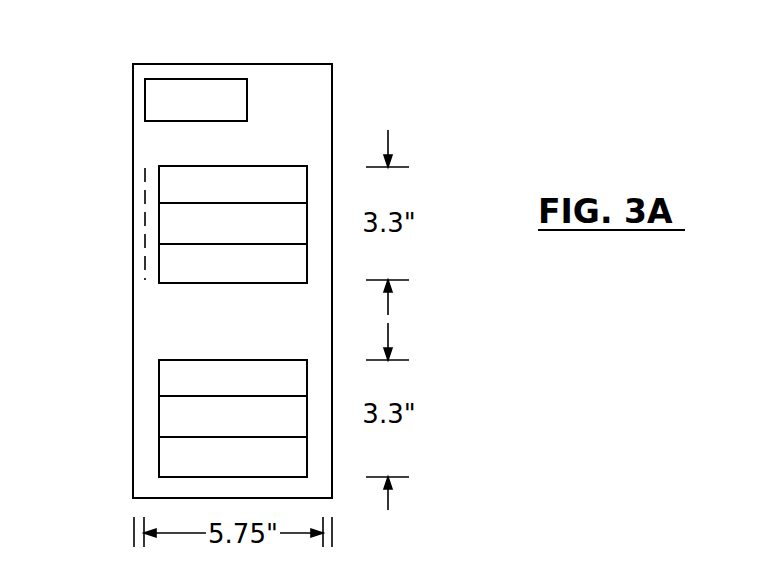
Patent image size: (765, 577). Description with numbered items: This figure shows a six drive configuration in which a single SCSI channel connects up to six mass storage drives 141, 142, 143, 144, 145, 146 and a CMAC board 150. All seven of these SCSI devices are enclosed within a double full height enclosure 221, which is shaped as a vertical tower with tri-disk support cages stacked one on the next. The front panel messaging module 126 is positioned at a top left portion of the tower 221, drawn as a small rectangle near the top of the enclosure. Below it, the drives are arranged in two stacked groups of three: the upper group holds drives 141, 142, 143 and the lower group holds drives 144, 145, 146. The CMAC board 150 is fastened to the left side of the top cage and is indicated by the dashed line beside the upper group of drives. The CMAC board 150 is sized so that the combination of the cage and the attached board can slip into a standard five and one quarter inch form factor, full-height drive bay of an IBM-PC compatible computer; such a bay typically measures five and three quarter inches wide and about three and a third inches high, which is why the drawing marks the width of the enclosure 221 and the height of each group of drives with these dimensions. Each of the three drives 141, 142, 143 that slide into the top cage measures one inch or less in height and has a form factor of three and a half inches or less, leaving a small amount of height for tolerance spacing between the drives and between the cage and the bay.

The double full height enclosure 221 is at (288, 64).
The front panel messaging module 126 is at (145, 98).
The CMAC board 150 is at (145, 222).
The mass storage drive 141 is at (233, 184).
The mass storage drive 142 is at (233, 223).
The mass storage drive 143 is at (233, 263).
The mass storage drive 144 is at (233, 378).
The mass storage drive 145 is at (233, 416).
The mass storage drive 146 is at (233, 457).